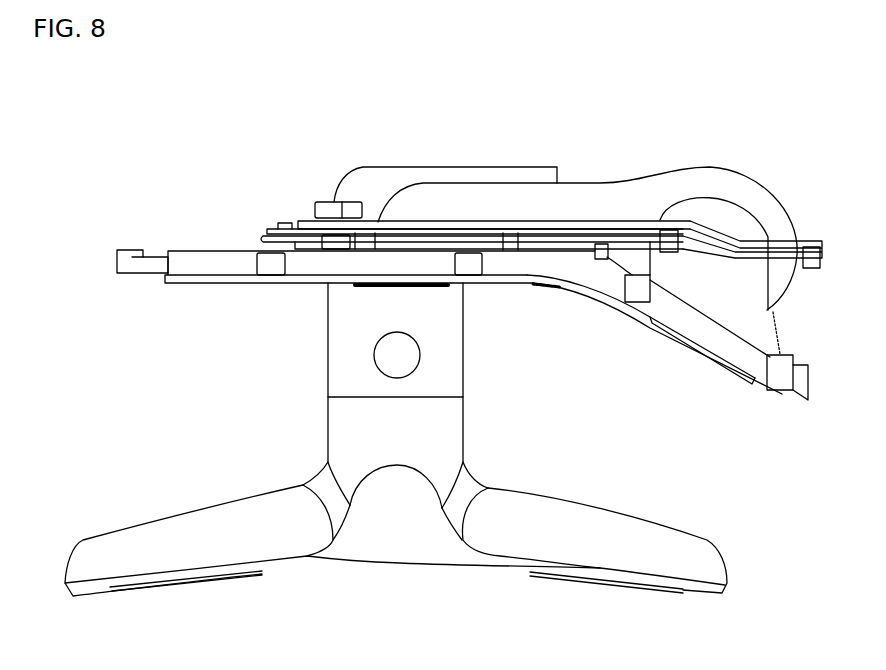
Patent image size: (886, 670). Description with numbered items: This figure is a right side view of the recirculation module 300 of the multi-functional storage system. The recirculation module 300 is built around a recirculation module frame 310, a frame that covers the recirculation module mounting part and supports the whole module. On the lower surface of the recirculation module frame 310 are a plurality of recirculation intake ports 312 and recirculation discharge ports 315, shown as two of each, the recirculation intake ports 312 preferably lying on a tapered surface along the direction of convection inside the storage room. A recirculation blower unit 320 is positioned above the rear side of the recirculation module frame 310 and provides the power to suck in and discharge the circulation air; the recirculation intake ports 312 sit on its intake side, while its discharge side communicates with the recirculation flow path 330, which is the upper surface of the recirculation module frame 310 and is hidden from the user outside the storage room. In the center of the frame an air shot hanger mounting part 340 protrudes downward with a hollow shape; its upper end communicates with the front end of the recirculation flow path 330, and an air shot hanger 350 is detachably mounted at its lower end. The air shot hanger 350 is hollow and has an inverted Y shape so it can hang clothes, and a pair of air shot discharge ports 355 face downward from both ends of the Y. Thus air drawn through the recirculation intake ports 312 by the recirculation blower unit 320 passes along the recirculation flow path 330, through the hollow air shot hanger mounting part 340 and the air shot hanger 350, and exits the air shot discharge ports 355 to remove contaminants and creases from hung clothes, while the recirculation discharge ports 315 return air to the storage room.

The recirculation module 300 is at (169, 107).
The recirculation module frame 310 is at (762, 382).
The recirculation intake port 312 is at (697, 352).
The recirculation discharge port 315 is at (383, 287).
The recirculation blower unit 320 is at (718, 215).
The recirculation flow path 330 is at (585, 195).
The air shot hanger mounting part 340 is at (463, 370).
The air shot hanger 350 is at (463, 436).
The air shot discharge port 355 is at (183, 585).